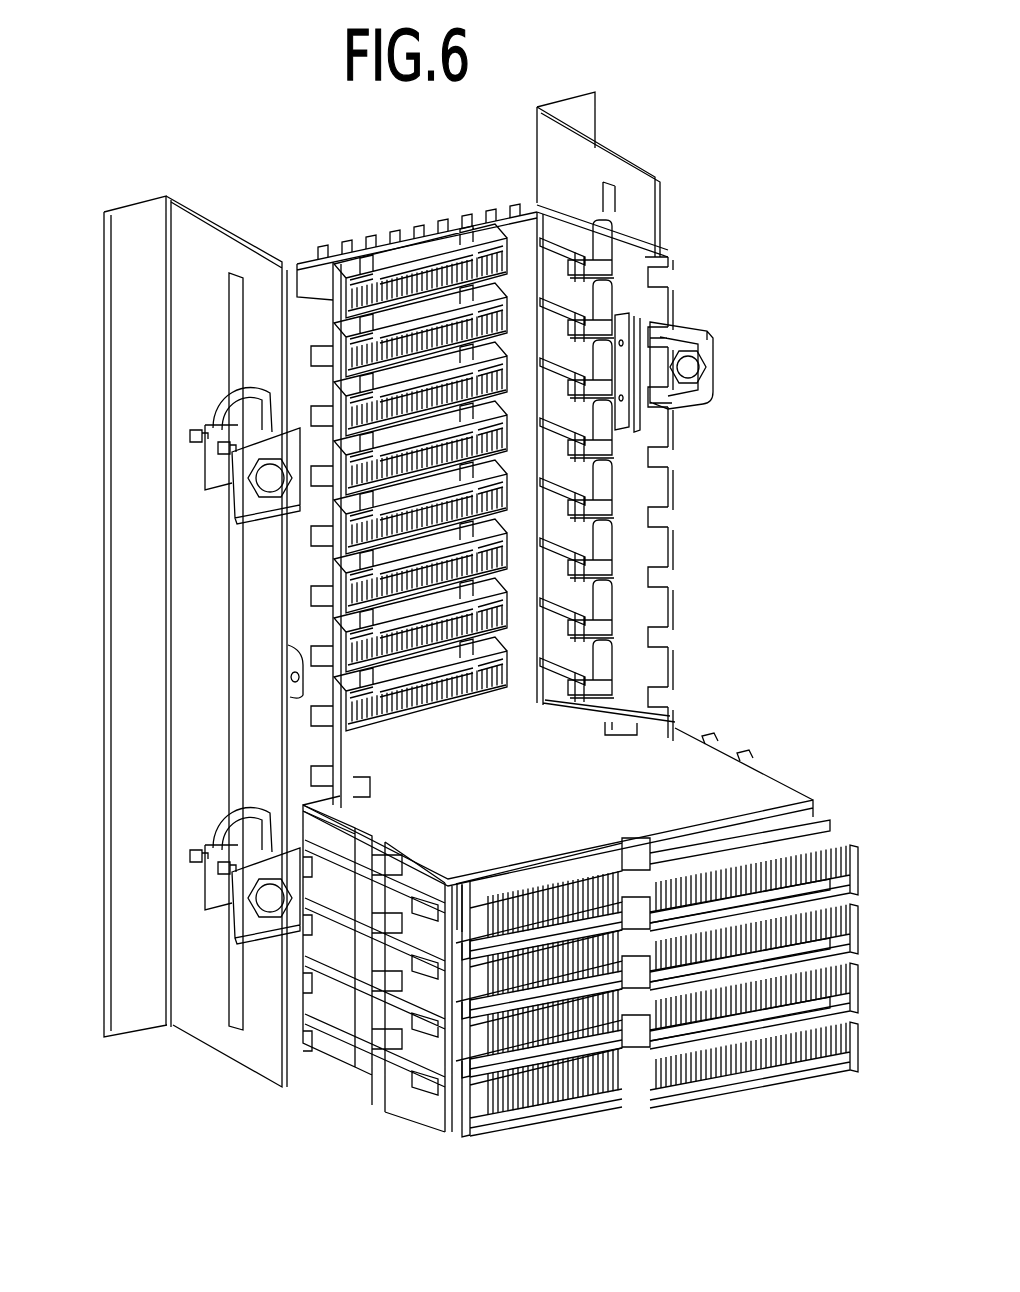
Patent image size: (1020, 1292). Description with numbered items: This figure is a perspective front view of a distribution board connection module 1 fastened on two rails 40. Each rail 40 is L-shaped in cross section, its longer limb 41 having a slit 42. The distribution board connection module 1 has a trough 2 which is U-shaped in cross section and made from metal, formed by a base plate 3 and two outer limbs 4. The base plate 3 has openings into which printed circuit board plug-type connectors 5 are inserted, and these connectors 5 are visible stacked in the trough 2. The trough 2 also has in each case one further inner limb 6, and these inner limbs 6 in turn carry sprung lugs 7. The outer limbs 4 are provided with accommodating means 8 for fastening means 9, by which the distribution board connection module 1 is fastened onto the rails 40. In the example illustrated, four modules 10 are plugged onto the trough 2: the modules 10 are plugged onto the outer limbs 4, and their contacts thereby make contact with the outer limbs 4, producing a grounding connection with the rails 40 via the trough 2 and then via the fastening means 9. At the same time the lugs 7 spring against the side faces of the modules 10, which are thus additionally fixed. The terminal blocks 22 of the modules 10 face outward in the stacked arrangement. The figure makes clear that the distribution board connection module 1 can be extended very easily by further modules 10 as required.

The distribution board connection module 1 is at (704, 705).
The trough 2 is at (632, 295).
The base plate 3 is at (513, 237).
The outer limb 4 is at (663, 497).
The printed circuit board plug-type connector 5 is at (368, 238).
The inner limb 6 is at (568, 295).
The sprung lug 7 is at (610, 448).
The accommodating means 8 is at (243, 907).
The fastening means 9 is at (190, 859).
The module 10 is at (714, 780).
The terminal module 22 is at (714, 1089).
The rail 40 is at (118, 495).
The longer limb 41 is at (218, 227).
The slit 42 is at (233, 317).